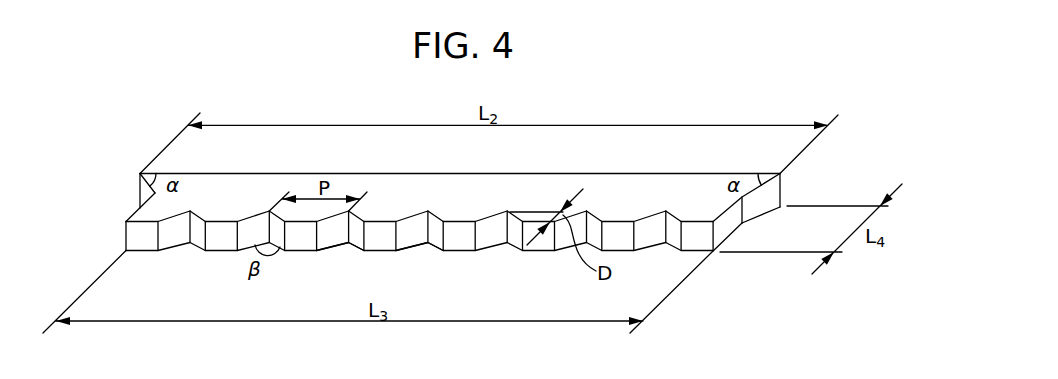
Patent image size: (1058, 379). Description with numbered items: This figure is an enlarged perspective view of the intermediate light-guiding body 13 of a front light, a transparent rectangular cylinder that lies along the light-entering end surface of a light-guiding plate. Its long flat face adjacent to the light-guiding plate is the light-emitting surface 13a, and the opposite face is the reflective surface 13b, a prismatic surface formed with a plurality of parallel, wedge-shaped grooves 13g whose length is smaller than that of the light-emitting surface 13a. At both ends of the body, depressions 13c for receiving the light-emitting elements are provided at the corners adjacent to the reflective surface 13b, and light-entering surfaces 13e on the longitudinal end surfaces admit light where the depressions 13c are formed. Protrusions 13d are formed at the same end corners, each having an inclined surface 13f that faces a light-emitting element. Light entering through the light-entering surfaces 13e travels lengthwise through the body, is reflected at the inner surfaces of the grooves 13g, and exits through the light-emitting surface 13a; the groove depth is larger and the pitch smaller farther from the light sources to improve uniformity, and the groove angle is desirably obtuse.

The intermediate light-guiding body 13 is at (455, 177).
The light-emitting surface 13a is at (380, 174).
The reflective surface 13b is at (545, 246).
The depression 13c is at (114, 231).
The protrusion 13d is at (139, 174).
The light-entering surface 13e is at (122, 242).
The inclined surface 13f is at (139, 197).
The groove 13g is at (425, 258).